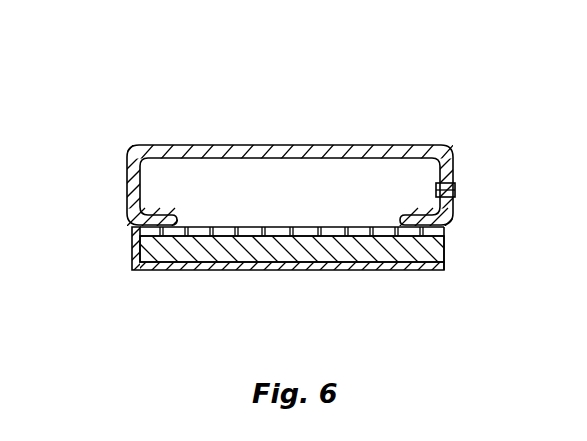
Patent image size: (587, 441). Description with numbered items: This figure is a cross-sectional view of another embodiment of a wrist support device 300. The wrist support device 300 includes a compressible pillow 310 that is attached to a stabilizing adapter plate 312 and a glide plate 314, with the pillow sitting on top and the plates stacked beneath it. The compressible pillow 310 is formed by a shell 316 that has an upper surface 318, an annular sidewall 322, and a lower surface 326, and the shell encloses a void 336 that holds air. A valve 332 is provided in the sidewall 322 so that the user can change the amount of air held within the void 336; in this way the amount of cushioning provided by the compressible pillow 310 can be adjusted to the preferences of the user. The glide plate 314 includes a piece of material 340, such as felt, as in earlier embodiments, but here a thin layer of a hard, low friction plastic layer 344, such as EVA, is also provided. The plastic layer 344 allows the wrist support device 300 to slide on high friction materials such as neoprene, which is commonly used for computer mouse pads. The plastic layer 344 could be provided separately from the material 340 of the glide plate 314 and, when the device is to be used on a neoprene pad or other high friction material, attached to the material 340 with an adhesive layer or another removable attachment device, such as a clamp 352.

The wrist support device 300 is at (366, 103).
The compressible pillow 310 is at (447, 148).
The stabilizing adapter plate 312 is at (452, 223).
The glide plate 314 is at (445, 248).
The shell 316 is at (127, 152).
The upper surface 318 is at (278, 145).
The annular sidewall 322 is at (128, 192).
The lower surface 326 is at (133, 225).
The valve 332 is at (456, 184).
The void 336 is at (182, 177).
The piece of material 340 is at (290, 250).
The plastic layer 344 is at (367, 272).
The clamp 352 is at (132, 268).